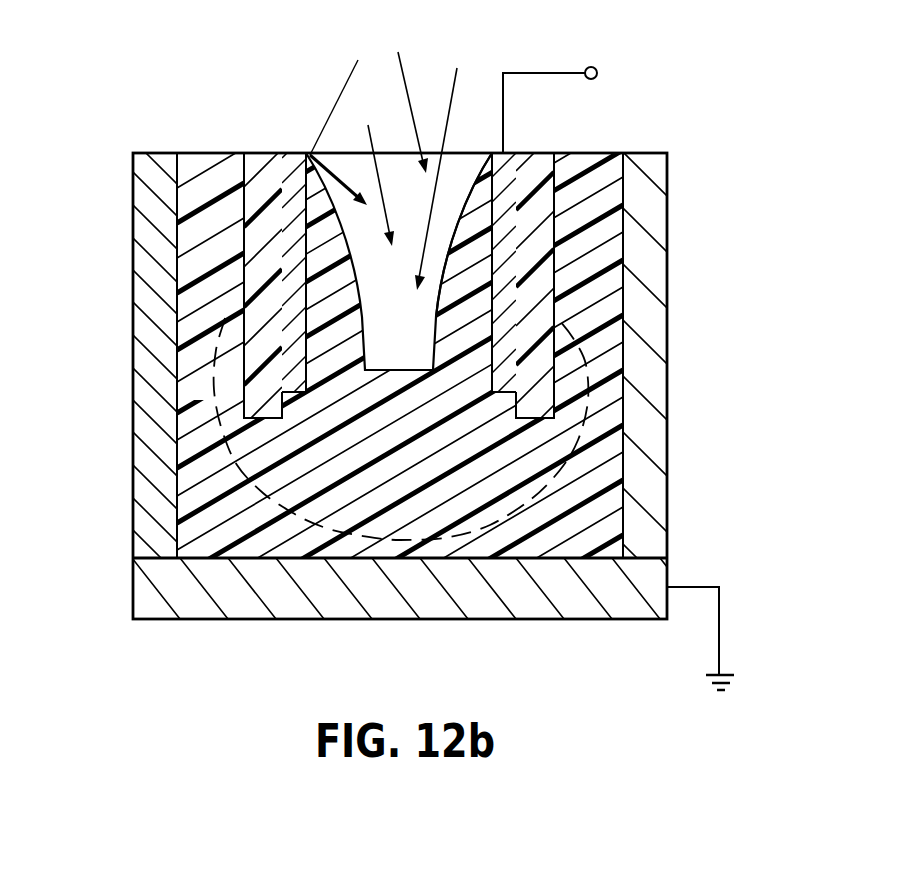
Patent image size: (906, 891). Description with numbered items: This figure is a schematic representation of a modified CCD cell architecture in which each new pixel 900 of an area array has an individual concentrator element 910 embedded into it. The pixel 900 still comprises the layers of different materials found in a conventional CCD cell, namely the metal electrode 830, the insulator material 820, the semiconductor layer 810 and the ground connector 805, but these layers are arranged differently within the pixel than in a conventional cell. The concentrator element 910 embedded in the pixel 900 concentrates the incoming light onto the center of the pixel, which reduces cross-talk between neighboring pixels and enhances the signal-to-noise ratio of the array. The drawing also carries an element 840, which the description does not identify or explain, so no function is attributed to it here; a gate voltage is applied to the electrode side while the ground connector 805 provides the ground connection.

The pixel 900 is at (122, 192).
The semiconductor layer 810 is at (197, 155).
The ground connector 805 is at (196, 610).
The insulator material 820 is at (268, 157).
The metal electrode 830 is at (310, 155).
The trench cavity 840 is at (338, 195).
The concentrator element 910 is at (442, 294).